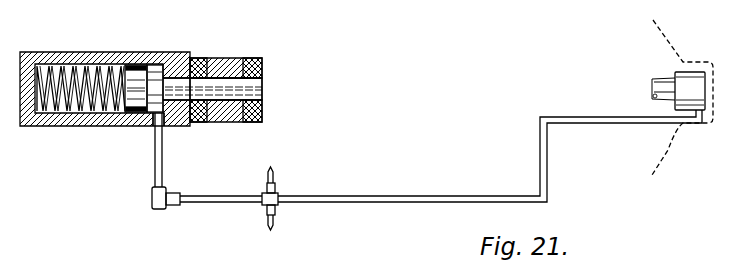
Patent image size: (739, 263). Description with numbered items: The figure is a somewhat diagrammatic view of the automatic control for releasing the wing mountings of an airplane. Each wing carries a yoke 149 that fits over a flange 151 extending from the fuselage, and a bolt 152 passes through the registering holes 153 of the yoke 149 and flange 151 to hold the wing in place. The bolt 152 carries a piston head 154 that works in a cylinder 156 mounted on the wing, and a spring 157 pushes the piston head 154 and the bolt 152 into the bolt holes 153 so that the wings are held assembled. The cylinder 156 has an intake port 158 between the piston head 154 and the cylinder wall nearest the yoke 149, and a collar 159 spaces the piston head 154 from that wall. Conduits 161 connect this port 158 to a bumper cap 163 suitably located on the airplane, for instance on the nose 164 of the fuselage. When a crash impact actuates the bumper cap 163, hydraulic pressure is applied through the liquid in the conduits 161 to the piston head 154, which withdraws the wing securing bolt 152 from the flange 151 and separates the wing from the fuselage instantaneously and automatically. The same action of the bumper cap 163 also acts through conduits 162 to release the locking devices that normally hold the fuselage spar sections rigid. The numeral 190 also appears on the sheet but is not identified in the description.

The yoke 149 is at (235, 95).
The flange 151 is at (265, 124).
The bolt 152 is at (262, 91).
The bolt hole 153 is at (228, 75).
The piston head 154 is at (131, 68).
The cylinder 156 is at (66, 126).
The spring 157 is at (57, 68).
The intake port 158 is at (143, 125).
The collar 159 is at (155, 68).
The conduit 161 is at (154, 173).
The conduit 162 is at (275, 172).
The bumper cap 163 is at (692, 80).
The nose 164 is at (686, 128).
The reference numeral 190 is at (636, 257).